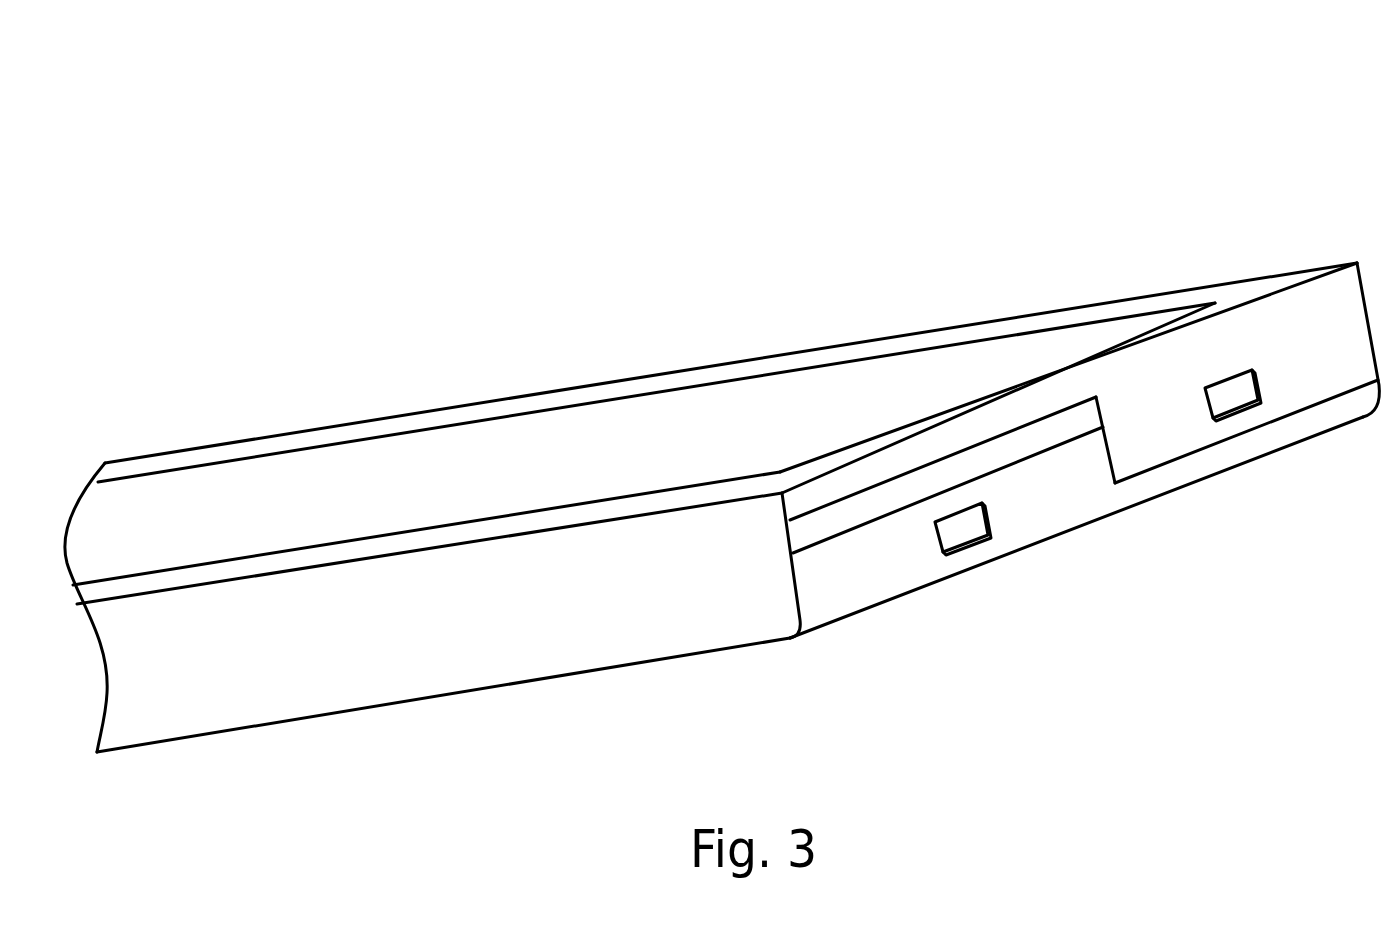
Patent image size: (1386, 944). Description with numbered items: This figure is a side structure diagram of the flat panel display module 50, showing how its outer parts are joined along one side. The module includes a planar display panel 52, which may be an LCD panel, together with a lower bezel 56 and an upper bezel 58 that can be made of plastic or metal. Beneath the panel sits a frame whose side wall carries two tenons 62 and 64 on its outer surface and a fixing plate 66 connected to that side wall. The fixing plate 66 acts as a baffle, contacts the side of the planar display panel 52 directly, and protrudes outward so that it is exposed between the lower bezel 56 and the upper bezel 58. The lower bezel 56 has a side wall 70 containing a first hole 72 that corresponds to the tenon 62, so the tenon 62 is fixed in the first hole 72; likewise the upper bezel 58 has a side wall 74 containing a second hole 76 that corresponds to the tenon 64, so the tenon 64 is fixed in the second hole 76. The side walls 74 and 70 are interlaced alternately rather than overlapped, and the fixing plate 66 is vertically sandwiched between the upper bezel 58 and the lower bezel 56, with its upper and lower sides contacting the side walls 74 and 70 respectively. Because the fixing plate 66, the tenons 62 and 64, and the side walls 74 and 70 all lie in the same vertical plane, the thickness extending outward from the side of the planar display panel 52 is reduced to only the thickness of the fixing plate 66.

The flat panel display module 50 is at (506, 140).
The planar display panel 52 is at (533, 448).
The lower bezel 56 is at (805, 641).
The upper bezel 58 is at (1213, 304).
The tenon 62 is at (953, 527).
The tenon 64 is at (1220, 393).
The fixing plate 66 is at (840, 523).
The side wall 70 is at (1122, 502).
The first hole 72 is at (968, 546).
The side wall 74 is at (1330, 318).
The second hole 76 is at (1238, 412).